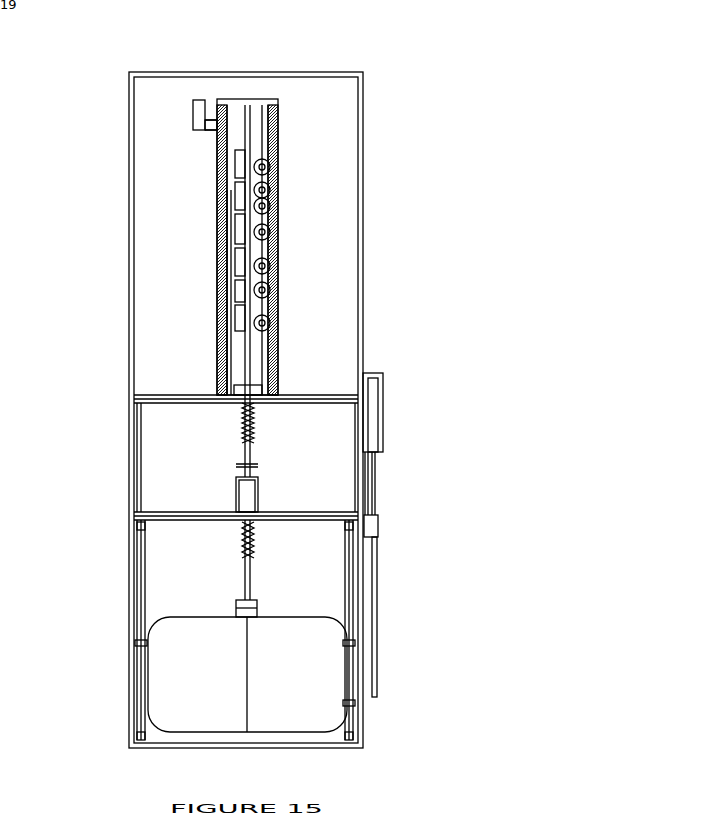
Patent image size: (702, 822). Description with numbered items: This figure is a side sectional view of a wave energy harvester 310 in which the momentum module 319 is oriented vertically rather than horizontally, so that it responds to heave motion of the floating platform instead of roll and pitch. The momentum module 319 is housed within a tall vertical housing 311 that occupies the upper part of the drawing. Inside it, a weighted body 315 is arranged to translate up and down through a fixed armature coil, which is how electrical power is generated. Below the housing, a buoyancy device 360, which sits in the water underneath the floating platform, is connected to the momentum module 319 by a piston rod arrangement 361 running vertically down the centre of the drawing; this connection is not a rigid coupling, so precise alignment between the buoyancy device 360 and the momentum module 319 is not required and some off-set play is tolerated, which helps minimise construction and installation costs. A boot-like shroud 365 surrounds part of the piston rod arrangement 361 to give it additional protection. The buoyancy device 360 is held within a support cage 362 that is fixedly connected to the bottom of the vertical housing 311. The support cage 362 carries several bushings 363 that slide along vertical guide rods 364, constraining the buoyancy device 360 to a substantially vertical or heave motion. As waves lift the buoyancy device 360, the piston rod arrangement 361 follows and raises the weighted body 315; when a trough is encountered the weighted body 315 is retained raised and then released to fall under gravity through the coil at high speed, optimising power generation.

The wave energy harvester 310 is at (424, 32).
The vertical housing 311 is at (364, 209).
The weighted body 315 is at (232, 326).
The momentum module 319 is at (279, 304).
The buoyancy device 360 is at (188, 671).
The piston rod arrangement 361 is at (240, 566).
The support cage 362 is at (366, 534).
The bushings 363 is at (370, 697).
The vertical guide rods 364 is at (356, 626).
The boot-like shroud 365 is at (238, 427).